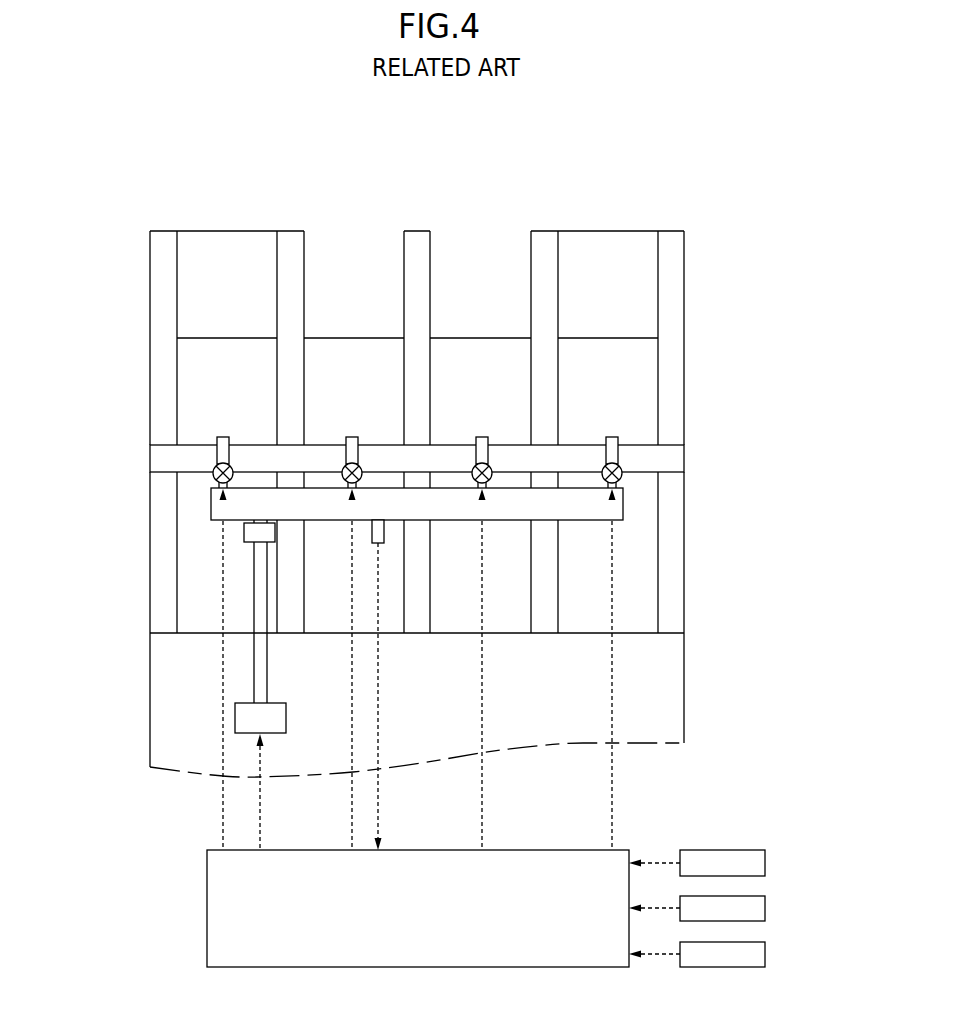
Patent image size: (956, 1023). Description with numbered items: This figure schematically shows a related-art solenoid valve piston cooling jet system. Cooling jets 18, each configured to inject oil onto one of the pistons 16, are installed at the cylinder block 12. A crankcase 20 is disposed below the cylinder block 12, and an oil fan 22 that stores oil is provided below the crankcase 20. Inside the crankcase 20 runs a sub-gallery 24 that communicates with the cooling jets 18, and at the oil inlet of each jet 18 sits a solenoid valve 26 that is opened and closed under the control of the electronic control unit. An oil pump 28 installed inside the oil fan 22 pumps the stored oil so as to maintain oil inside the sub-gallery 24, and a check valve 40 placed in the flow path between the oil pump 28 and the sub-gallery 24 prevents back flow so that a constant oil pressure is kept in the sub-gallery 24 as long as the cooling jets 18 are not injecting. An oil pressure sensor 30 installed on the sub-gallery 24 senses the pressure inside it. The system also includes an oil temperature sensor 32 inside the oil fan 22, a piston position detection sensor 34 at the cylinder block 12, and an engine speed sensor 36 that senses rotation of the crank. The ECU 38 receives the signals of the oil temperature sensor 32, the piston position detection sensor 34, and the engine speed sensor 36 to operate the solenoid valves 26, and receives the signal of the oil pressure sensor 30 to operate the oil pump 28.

The cylinder block 12 is at (150, 385).
The piston 16 is at (610, 243).
The cooling jet 18 is at (617, 439).
The crankcase 20 is at (158, 583).
The oil fan 22 is at (162, 694).
The sub-gallery 24 is at (622, 502).
The solenoid valve 26 is at (621, 469).
The oil pump 28 is at (248, 722).
The oil pressure sensor 30 is at (382, 533).
The oil temperature sensor 32 is at (765, 863).
The piston position detection sensor 34 is at (765, 908).
The engine speed sensor 36 is at (765, 954).
The ECU 38 is at (207, 905).
The check valve 40 is at (247, 533).